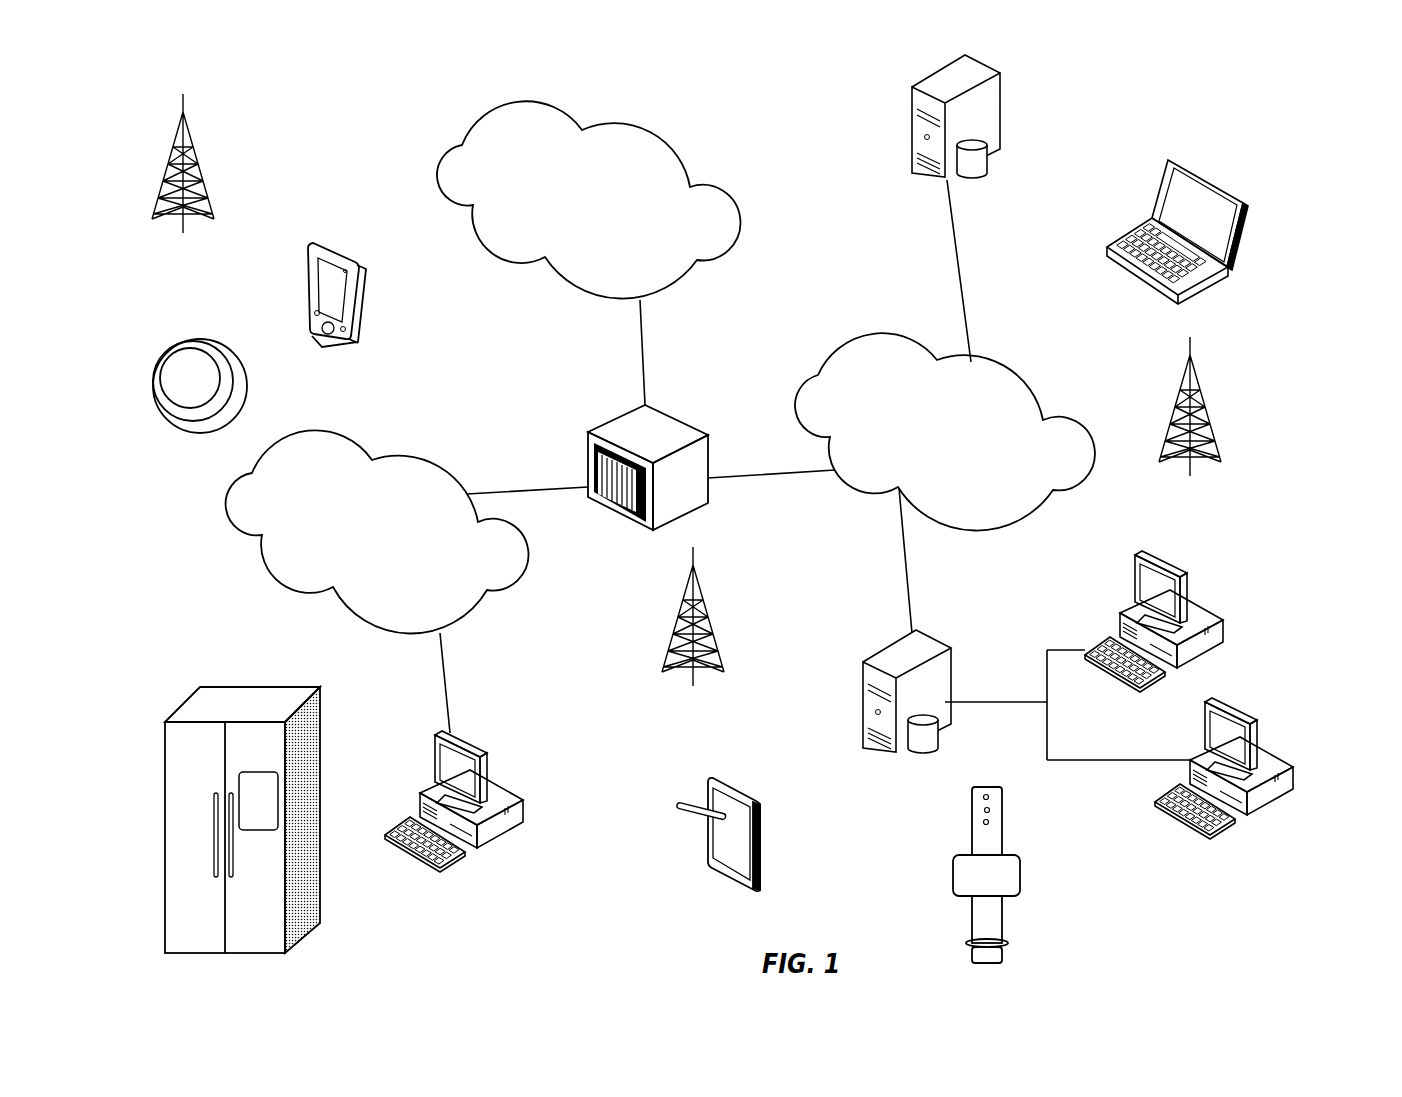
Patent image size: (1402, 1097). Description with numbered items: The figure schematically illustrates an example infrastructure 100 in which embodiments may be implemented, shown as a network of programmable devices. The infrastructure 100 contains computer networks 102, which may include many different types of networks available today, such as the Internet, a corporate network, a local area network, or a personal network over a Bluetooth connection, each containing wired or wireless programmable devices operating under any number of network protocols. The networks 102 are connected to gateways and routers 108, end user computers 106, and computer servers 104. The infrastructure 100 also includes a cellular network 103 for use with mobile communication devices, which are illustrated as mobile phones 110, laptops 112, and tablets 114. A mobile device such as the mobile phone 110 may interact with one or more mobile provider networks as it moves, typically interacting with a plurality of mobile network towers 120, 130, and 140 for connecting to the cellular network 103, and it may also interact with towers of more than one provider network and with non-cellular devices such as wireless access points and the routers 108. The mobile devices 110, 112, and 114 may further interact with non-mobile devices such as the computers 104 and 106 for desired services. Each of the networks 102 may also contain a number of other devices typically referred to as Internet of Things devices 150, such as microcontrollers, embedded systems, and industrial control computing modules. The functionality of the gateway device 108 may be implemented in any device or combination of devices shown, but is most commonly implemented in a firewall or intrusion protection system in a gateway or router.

The infrastructure 100 is at (1092, 148).
The computer networks 102 is at (1040, 395).
The cellular network 103 is at (635, 133).
The computer servers 104 is at (915, 108).
The end user computers 106 is at (522, 802).
The gateways and routers 108 is at (670, 415).
The mobile phones 110 is at (337, 253).
The laptops 112 is at (1222, 186).
The tablets 114 is at (747, 788).
The mobile network tower 120 is at (693, 632).
The mobile network tower 130 is at (1190, 421).
The mobile network tower 140 is at (183, 179).
The Internet of Things devices 150 is at (182, 345).